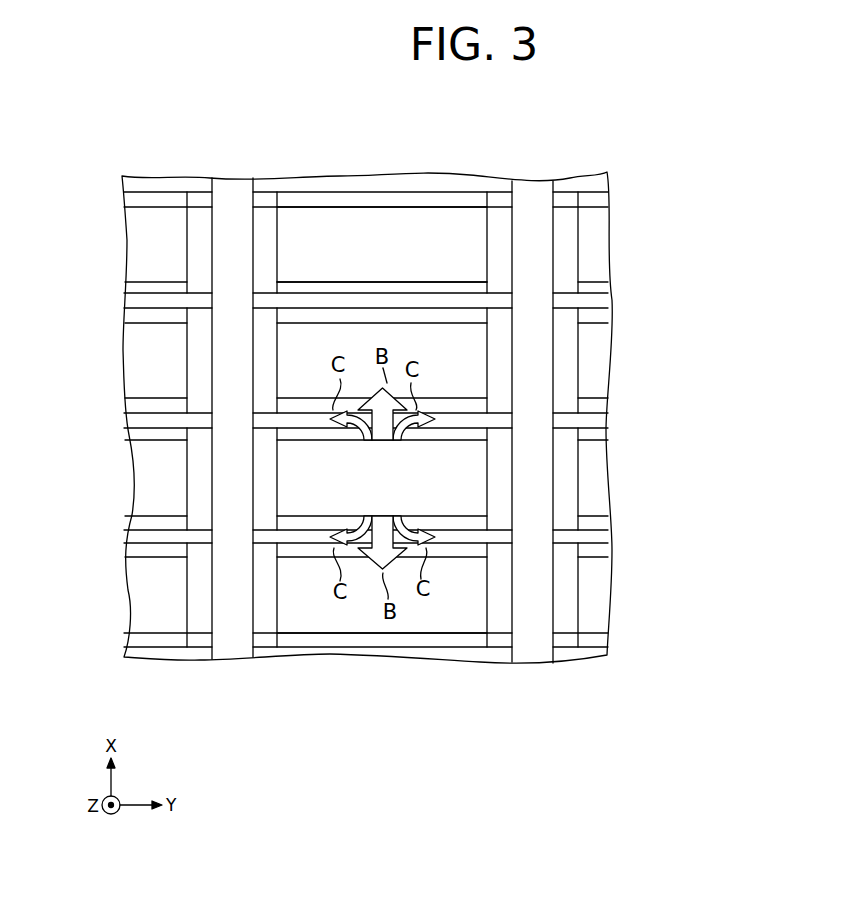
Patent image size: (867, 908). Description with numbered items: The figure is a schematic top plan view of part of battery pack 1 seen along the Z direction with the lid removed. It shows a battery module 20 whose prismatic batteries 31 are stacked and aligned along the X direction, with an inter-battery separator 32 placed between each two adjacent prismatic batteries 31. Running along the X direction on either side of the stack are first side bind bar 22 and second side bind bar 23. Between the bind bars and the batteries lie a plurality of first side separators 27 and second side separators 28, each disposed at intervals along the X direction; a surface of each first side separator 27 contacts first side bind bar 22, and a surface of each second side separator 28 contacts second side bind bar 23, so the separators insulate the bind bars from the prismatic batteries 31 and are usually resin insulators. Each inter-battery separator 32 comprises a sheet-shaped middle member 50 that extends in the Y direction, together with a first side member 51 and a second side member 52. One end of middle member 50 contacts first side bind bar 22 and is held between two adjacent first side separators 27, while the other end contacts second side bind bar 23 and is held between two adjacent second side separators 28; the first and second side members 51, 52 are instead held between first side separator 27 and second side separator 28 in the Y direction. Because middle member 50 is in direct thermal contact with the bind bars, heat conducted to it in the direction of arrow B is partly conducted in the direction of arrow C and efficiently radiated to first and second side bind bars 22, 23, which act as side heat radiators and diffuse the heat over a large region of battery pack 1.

The battery pack 1 is at (367, 417).
The battery module 20 is at (422, 172).
The first side bind bar 22 is at (232, 245).
The second side bind bar 23 is at (533, 237).
The first side separator 27 is at (270, 481).
The second side separator 28 is at (503, 357).
The prismatic battery 31 is at (323, 225).
The inter-battery separator 32 is at (438, 275).
The middle member 50 is at (455, 305).
The first side member 51 is at (300, 318).
The second side member 52 is at (381, 292).